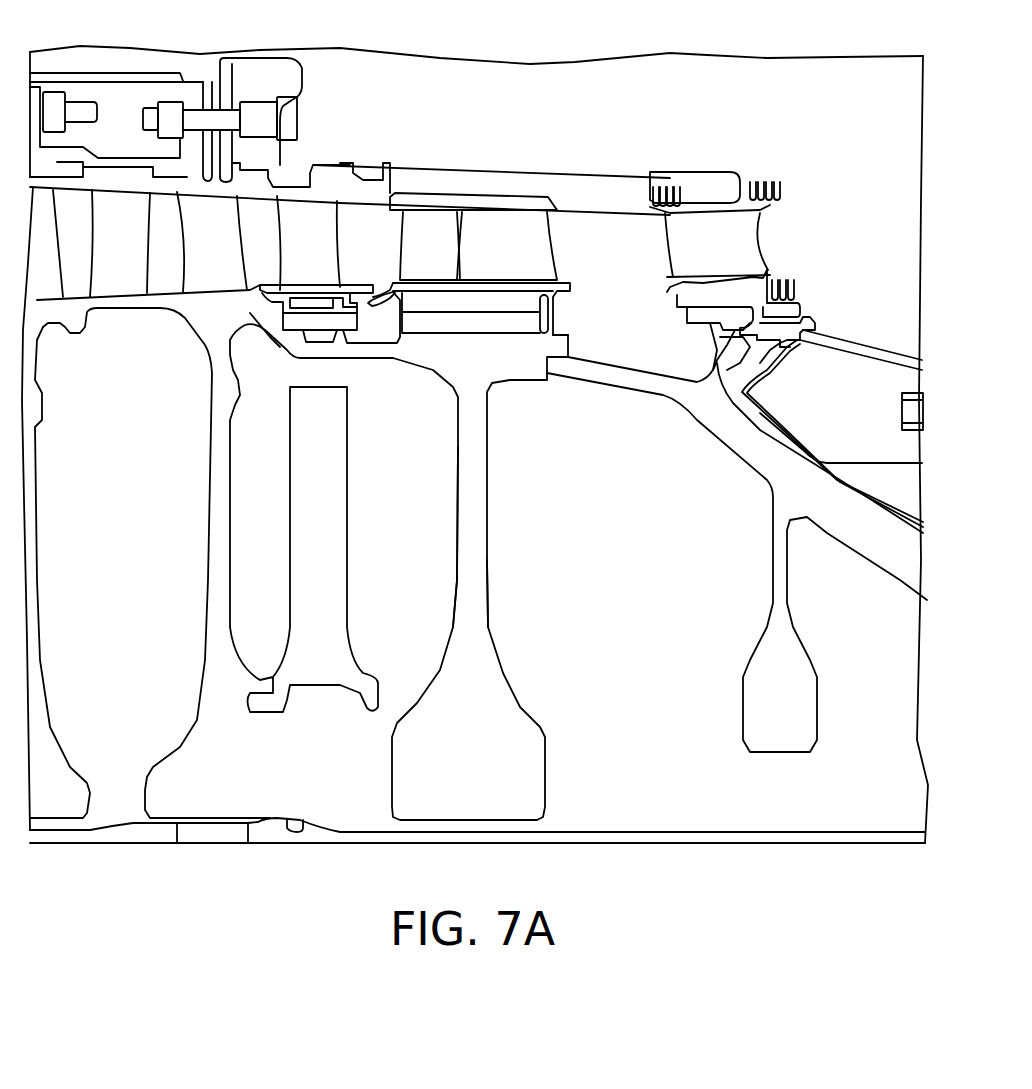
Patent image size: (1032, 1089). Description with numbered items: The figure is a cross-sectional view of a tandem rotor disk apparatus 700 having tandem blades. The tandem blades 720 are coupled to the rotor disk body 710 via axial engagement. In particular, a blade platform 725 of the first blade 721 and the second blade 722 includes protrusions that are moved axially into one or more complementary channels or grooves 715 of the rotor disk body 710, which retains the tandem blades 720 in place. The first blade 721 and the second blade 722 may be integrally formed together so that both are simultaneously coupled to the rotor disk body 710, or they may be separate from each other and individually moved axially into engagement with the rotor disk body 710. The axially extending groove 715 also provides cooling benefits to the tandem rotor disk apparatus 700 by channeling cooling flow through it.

The tandem rotor disk apparatus 700 is at (583, 510).
The rotor disk body 710 is at (498, 371).
The channel/groove 715 is at (527, 317).
The tandem blades 720 is at (458, 206).
The first blade 721 is at (450, 266).
The second blade 722 is at (531, 266).
The blade platform 725 is at (570, 284).